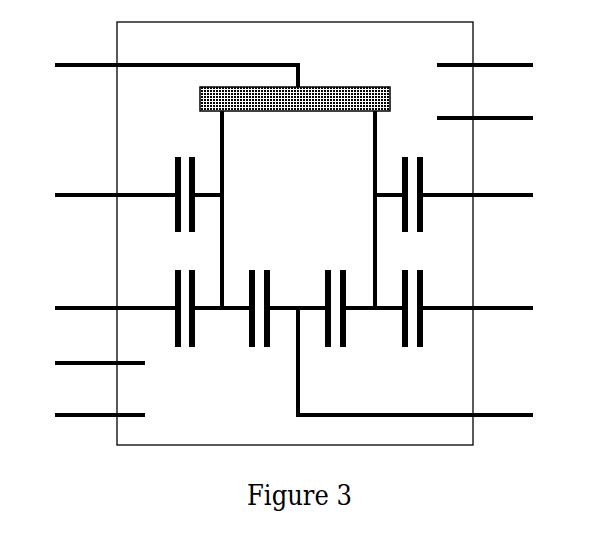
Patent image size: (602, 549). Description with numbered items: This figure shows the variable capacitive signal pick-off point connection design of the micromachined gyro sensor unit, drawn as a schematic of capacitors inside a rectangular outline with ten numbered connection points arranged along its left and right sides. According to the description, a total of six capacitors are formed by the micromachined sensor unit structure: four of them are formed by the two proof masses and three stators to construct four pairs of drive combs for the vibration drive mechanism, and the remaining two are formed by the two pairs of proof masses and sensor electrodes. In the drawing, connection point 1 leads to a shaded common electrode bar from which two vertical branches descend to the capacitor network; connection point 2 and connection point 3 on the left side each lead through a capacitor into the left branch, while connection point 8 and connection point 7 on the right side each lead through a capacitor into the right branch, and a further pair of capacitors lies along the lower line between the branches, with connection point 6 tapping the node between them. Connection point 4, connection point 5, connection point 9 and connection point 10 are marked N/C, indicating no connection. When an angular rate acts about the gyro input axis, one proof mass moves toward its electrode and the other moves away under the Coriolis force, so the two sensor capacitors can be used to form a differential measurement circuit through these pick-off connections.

The terminal 1 connected to common shaded electrode 1 is at (211, 179).
The terminal 2 with series capacitor 2 is at (127, 194).
The terminal 3 with series capacitors 3 is at (179, 308).
The terminal 4 (no connection) 4 is at (106, 364).
The terminal 5 (no connection) 5 is at (106, 416).
The terminal 6 connected to capacitor chain node 6 is at (430, 366).
The terminal 7 with series capacitors 7 is at (446, 308).
The terminal 8 with series capacitor 8 is at (469, 194).
The terminal 9 (no connection) 9 is at (482, 119).
The terminal 10 (no connection) 10 is at (485, 65).